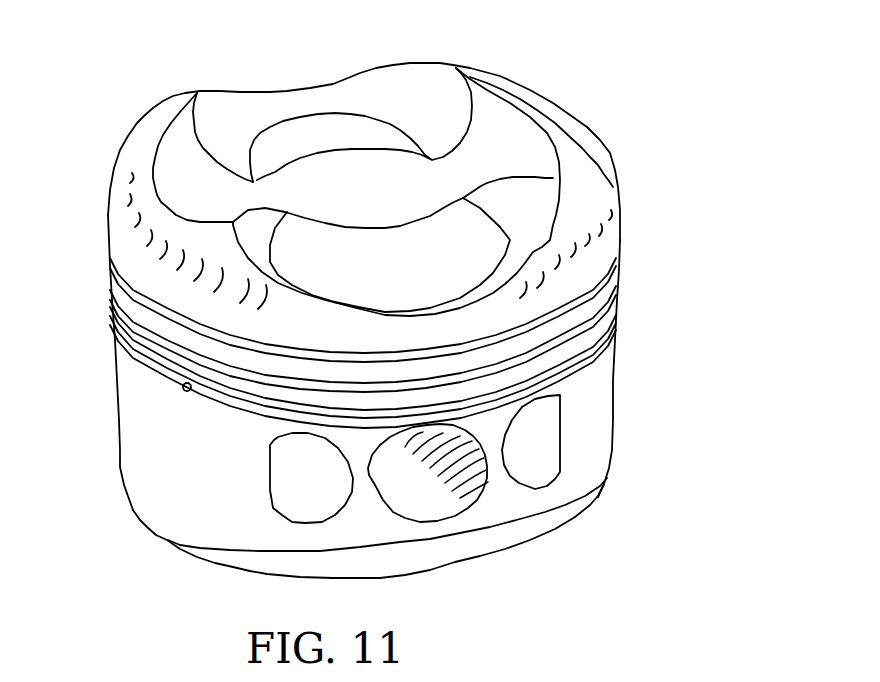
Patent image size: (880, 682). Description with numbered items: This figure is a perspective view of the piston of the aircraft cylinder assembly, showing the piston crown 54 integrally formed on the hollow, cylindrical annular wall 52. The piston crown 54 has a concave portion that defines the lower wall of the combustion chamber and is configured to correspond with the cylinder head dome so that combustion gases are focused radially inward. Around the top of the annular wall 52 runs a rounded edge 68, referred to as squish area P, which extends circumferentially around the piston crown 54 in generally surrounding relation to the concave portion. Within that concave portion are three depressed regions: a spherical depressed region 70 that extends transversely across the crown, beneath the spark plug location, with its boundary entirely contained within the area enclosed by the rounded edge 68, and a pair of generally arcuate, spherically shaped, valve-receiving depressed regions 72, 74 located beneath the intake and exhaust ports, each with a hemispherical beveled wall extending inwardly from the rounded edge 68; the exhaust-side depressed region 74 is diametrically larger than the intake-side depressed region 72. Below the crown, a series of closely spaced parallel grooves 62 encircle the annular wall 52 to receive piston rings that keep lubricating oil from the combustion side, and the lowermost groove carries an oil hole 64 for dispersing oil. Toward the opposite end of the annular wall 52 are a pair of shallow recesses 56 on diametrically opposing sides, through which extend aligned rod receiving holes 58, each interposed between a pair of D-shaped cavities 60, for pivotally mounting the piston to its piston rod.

The annular wall 52 is at (440, 383).
The piston crown 54 is at (396, 180).
The shallow recesses 56 is at (368, 573).
The rod receiving holes 58 is at (495, 510).
The D-shaped cavities 60 is at (427, 504).
The parallel grooves 62 is at (430, 329).
The oil hole 64 is at (116, 424).
The rounded edge 68 is at (158, 162).
The depressed region 70 is at (434, 162).
The depressed region 72 is at (462, 200).
The depressed region 74 is at (361, 93).